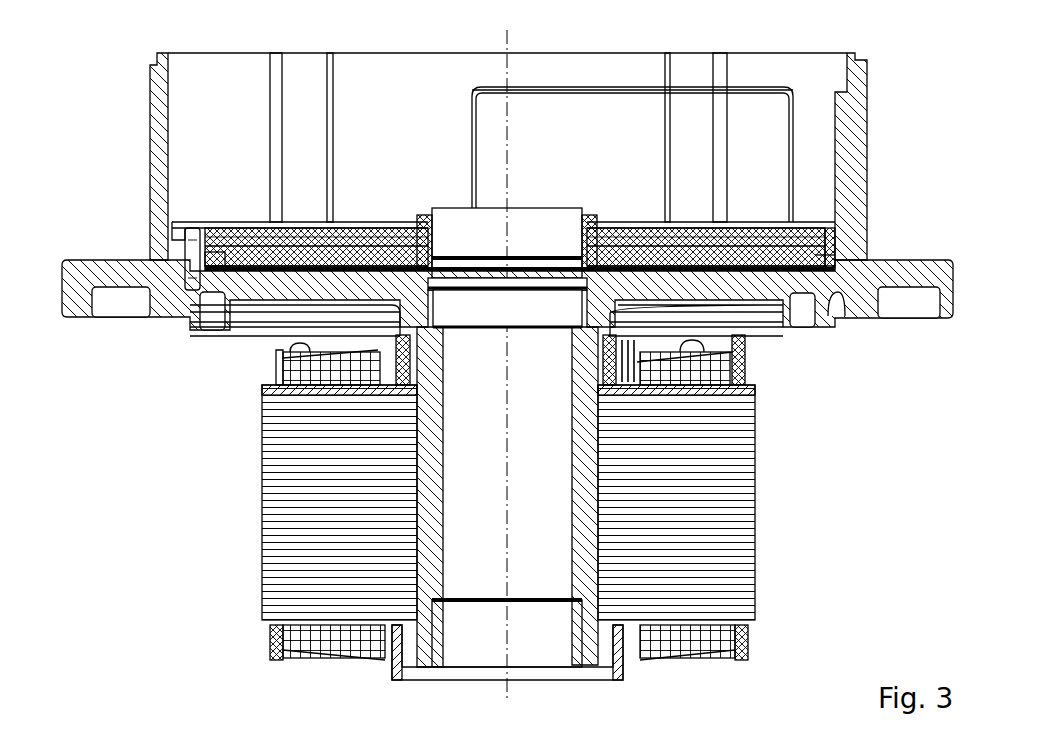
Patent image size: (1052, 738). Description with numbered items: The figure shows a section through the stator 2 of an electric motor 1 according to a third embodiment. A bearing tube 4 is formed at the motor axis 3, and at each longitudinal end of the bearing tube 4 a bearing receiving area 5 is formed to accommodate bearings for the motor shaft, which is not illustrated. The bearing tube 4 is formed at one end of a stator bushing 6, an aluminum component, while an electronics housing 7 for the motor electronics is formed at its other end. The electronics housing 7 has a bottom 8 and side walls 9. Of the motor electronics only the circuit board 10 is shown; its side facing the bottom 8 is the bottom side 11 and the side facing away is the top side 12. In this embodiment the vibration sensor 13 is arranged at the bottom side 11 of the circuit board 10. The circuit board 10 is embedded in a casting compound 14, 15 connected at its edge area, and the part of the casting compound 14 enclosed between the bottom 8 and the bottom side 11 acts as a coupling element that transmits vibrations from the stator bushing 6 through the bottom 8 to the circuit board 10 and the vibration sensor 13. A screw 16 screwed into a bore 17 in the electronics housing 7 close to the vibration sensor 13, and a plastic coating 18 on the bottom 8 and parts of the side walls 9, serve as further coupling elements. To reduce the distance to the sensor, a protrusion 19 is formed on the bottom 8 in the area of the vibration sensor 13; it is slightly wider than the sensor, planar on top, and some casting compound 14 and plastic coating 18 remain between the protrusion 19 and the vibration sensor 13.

The electric motor 1 is at (92, 80).
The stator 2 is at (278, 455).
The motor axis 3 is at (508, 690).
The bearing tube 4 is at (572, 473).
The bearing receiving area 5 is at (577, 300).
The stator bushing 6 is at (752, 298).
The electronics housing 7 is at (237, 105).
The bottom 8 is at (278, 280).
The side walls 9 is at (160, 148).
The circuit board 10 is at (820, 245).
The bottom side 11 is at (805, 258).
The top side 12 is at (800, 228).
The vibration sensor 13 is at (250, 258).
The casting compound 14 is at (335, 260).
The casting compound 15 is at (312, 235).
The screw 16 is at (170, 228).
The bore 17 is at (190, 290).
The plastic coating 18 is at (410, 265).
The protrusion 19 is at (250, 270).